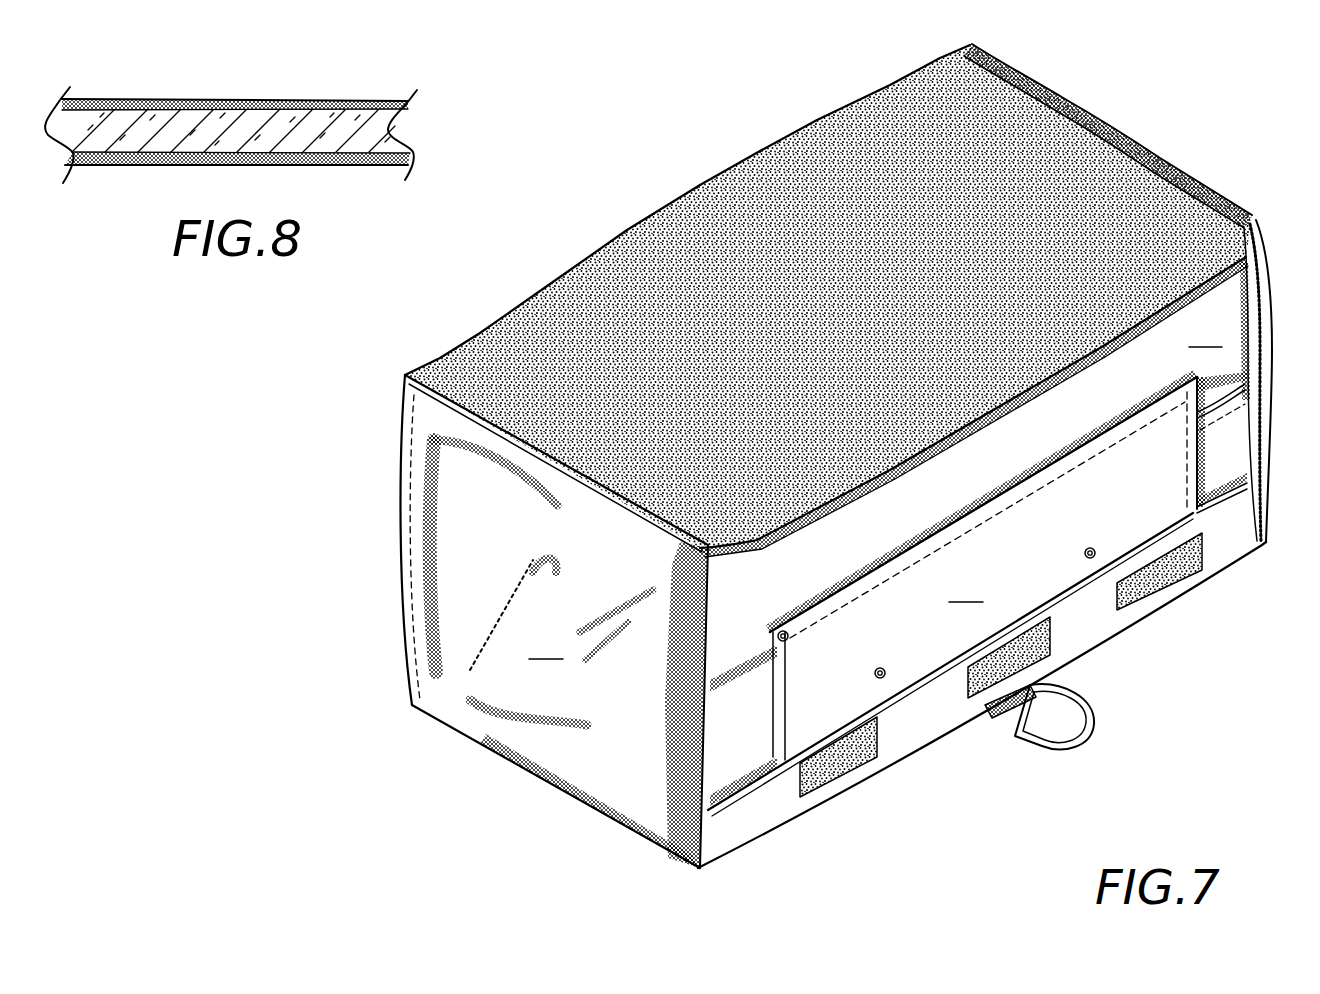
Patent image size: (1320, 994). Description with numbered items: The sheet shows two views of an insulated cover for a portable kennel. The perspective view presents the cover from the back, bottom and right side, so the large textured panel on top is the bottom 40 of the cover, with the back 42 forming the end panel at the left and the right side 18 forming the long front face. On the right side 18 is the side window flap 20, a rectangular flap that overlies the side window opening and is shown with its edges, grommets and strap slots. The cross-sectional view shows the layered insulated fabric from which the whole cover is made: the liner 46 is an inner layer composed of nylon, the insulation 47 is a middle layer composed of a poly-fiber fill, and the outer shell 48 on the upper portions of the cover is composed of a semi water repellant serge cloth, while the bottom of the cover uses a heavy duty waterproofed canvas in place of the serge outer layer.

In FIG. 7, the right side 18 is at (968, 544).
In FIG. 7, the side window flap 20 is at (977, 593).
In FIG. 7, the bottom 40 is at (783, 163).
In FIG. 7, the back 42 is at (554, 621).
In FIG. 8, the liner 46 is at (247, 102).
In FIG. 8, the insulation 47 is at (193, 125).
In FIG. 8, the outer shell 48 is at (312, 160).